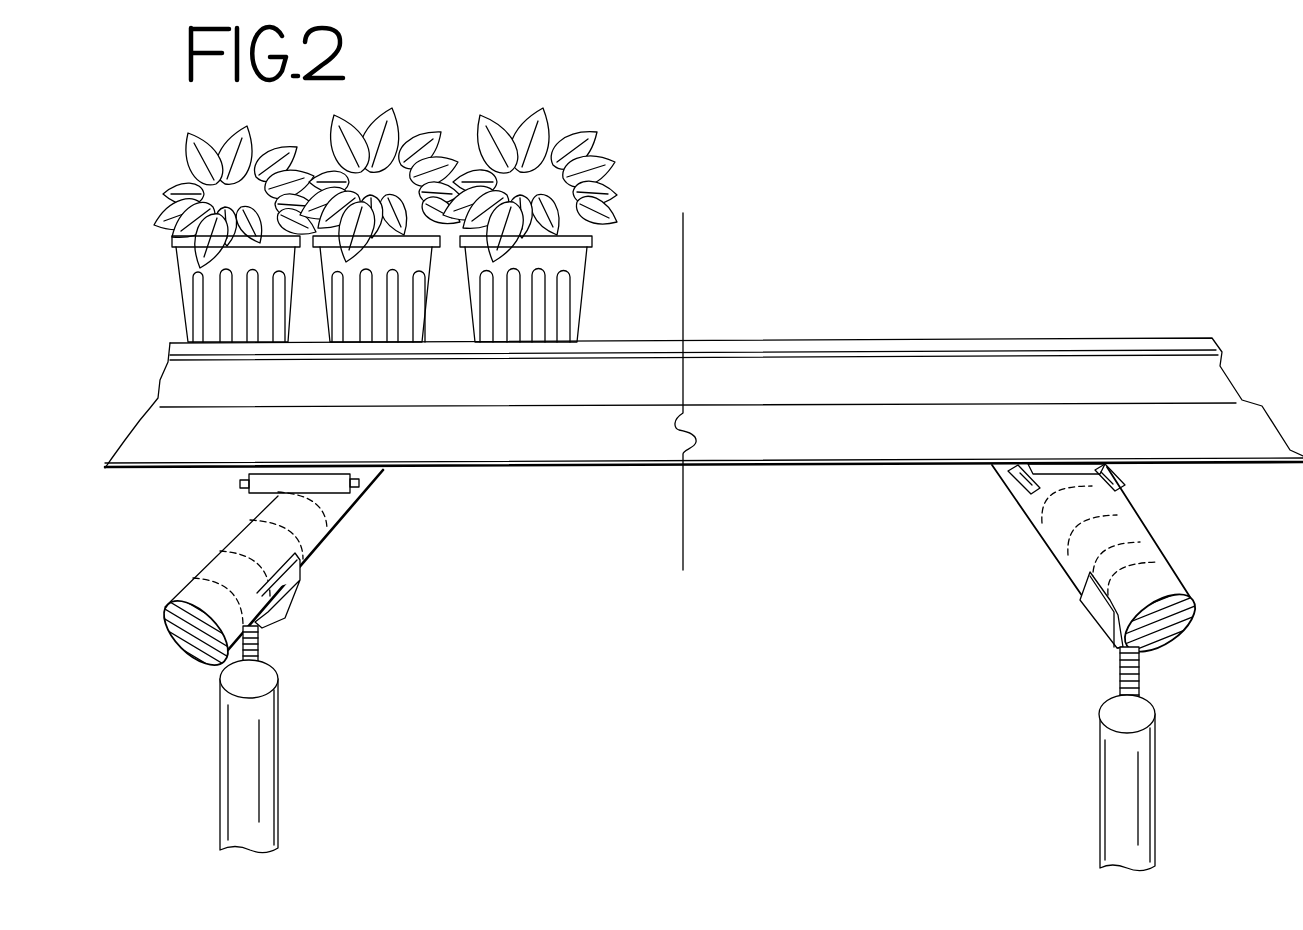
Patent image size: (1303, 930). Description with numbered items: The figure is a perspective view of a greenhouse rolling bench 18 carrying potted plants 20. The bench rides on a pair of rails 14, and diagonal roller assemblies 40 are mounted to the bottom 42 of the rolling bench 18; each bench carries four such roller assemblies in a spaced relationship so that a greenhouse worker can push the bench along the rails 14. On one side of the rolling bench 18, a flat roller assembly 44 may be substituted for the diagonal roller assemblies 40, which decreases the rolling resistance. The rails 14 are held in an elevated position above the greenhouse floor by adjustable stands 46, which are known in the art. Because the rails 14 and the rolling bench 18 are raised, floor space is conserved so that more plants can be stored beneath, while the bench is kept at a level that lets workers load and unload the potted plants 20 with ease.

The rails 14 is at (305, 563).
The rolling bench 18 is at (912, 338).
The potted plants 20 is at (572, 257).
The diagonal roller assemblies 40 is at (1120, 478).
The bottom 42 is at (790, 467).
The flat roller assembly 44 is at (358, 484).
The adjustable stands 46 is at (278, 748).